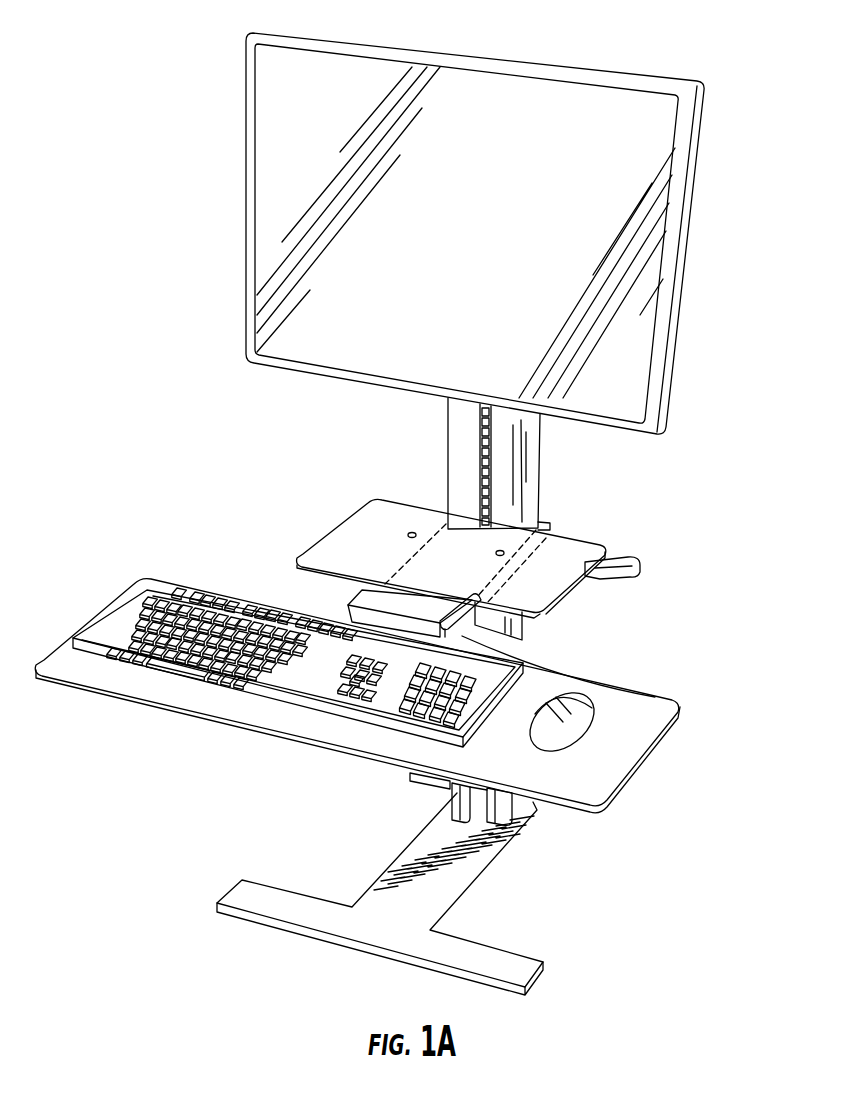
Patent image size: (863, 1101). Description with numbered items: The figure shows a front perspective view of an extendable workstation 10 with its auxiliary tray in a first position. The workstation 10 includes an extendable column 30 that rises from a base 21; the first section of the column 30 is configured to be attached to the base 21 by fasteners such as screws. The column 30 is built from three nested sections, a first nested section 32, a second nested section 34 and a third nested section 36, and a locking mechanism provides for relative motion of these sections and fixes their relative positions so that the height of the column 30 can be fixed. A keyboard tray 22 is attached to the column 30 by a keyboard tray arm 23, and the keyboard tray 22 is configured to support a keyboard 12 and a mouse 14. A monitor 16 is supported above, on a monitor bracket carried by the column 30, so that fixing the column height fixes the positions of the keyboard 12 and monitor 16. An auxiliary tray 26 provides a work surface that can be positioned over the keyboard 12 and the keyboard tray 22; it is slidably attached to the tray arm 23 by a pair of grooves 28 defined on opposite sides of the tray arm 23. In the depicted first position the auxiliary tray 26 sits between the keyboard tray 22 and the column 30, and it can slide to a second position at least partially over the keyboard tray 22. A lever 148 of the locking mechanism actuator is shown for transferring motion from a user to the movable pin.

The workstation 10 is at (770, 387).
The keyboard 12 is at (485, 715).
The mouse 14 is at (576, 738).
The monitor 16 is at (698, 225).
The base 21 is at (243, 893).
The keyboard tray 22 is at (57, 652).
The keyboard tray arm 23 is at (383, 598).
The auxiliary tray 26 is at (573, 547).
The grooves 28 is at (452, 623).
The extendable column 30 is at (408, 468).
The first nested section 32 is at (458, 793).
The second nested section 34 is at (520, 621).
The third nested section 36 is at (527, 452).
The lever 148 is at (606, 562).